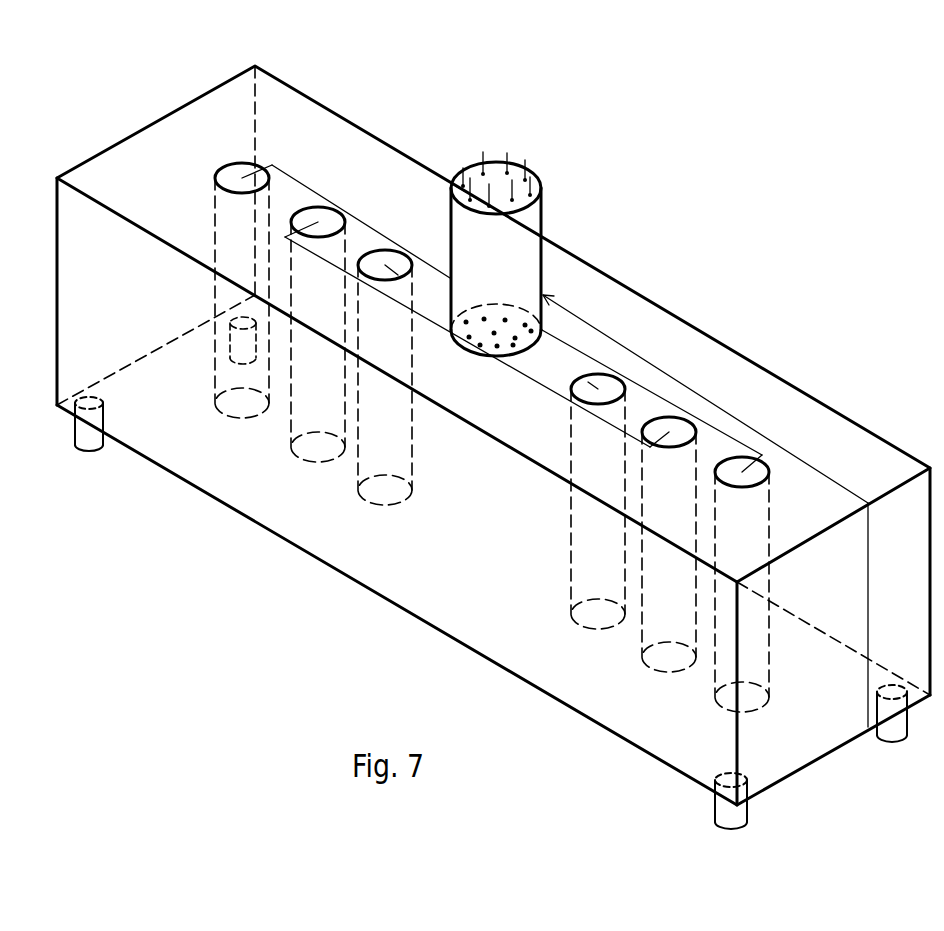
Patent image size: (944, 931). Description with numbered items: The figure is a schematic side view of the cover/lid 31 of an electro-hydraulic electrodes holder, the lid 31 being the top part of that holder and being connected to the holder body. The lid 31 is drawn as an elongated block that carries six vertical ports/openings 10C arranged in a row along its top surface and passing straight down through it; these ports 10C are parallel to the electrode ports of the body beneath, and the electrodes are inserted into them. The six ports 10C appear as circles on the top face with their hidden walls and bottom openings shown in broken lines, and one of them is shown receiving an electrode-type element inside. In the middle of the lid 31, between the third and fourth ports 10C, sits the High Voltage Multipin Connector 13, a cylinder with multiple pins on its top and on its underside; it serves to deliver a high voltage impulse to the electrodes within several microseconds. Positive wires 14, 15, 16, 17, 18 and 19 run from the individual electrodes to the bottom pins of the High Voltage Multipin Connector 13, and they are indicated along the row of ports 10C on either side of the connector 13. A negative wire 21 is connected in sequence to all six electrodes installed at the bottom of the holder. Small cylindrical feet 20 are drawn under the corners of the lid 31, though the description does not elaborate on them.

The cover/lid 31 is at (270, 70).
The positive wire 14 is at (294, 178).
The positive wire 15 is at (317, 253).
The positive wire 16 is at (430, 298).
The High Voltage Multipin Connector 13 is at (543, 218).
The negative wire 21 is at (695, 390).
The positive wire 17 is at (727, 433).
The positive wire 19 is at (551, 349).
The positive wire 18 is at (613, 428).
The foot 20 is at (75, 447).
The vertical ports/openings 10C is at (230, 412).